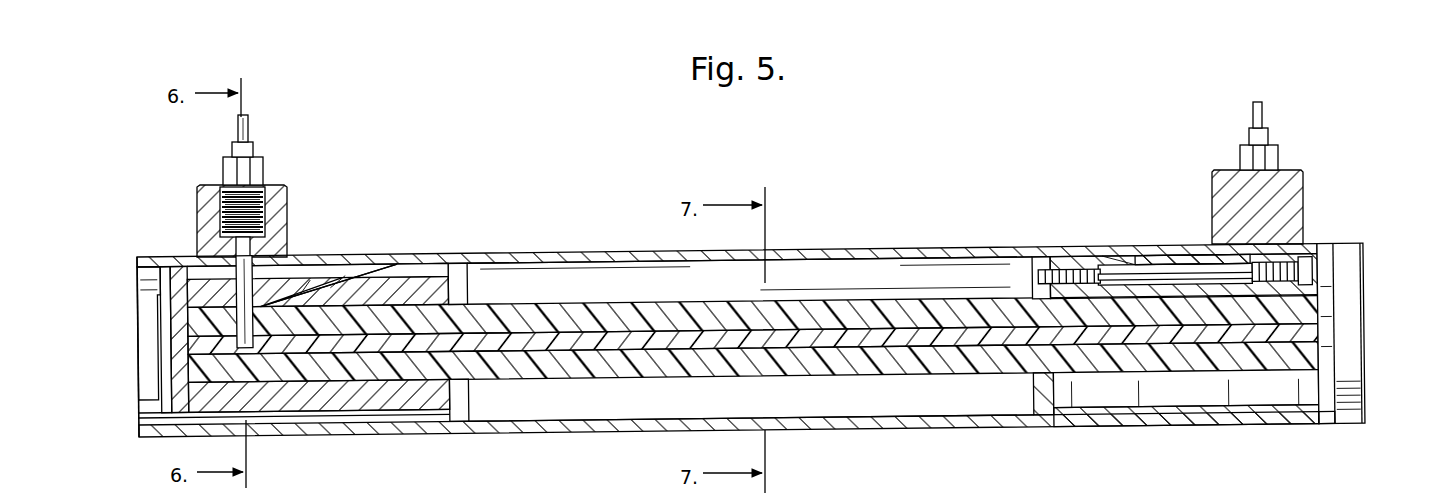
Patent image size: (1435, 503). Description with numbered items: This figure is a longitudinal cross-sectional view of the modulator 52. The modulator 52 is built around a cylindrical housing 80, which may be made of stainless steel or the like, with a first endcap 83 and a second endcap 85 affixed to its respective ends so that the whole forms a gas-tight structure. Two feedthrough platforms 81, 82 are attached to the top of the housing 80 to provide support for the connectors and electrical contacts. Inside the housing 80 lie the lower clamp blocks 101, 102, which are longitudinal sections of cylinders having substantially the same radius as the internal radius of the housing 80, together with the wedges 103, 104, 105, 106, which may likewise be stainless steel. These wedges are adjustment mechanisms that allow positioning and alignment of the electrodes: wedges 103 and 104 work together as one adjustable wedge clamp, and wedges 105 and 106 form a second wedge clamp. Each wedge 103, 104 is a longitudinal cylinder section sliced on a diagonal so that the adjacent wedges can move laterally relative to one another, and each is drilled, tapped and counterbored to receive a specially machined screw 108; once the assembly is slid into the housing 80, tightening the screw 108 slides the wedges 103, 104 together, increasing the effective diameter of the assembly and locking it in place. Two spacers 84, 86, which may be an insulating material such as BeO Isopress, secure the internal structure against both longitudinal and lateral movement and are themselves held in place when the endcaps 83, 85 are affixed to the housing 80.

The modulator 52 is at (848, 225).
The cylindrical housing 80 is at (515, 262).
The feedthrough platform 81 is at (282, 197).
The feedthrough platform 82 is at (1295, 188).
The first endcap 83 is at (150, 392).
The spacer 84 is at (188, 394).
The second endcap 85 is at (1367, 395).
The spacer 86 is at (1320, 408).
The lower clamp block 101 is at (327, 402).
The lower clamp block 102 is at (1120, 395).
The wedge 103 is at (298, 283).
The wedge 104 is at (407, 290).
The wedge 105 is at (1160, 255).
The wedge 106 is at (1070, 258).
The screw 108 is at (1287, 263).